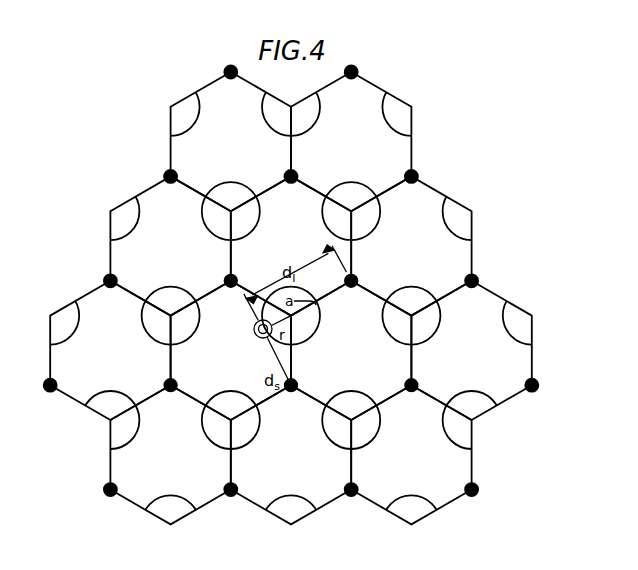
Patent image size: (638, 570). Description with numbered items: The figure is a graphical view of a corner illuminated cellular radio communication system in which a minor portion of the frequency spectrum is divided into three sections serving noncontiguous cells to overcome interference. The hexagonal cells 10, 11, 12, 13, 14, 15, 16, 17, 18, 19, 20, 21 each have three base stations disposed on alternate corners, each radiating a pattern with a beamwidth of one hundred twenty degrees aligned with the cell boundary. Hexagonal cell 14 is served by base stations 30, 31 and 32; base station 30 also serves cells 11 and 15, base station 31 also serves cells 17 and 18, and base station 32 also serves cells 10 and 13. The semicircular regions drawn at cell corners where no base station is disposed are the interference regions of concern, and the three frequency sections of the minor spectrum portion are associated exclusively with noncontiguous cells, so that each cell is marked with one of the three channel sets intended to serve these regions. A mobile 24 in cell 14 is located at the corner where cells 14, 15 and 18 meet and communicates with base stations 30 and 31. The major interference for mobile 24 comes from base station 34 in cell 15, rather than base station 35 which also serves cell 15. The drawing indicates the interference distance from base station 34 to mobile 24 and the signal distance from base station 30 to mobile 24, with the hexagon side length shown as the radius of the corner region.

The cell 10 is at (160, 484).
The cell 11 is at (280, 488).
The cell 12 is at (400, 486).
The cell 13 is at (100, 384).
The hexagonal cell 14 is at (220, 384).
The cell 15 is at (343, 384).
The cell 16 is at (463, 386).
The cell 17 is at (162, 276).
The cell 18 is at (284, 210).
The cell 19 is at (403, 278).
The cell 20 is at (223, 174).
The cell 21 is at (343, 174).
The mobile 24 is at (264, 338).
The base station 30 is at (290, 391).
The base station 31 is at (230, 287).
The base station 32 is at (175, 381).
The base station 34 is at (351, 287).
The base station 35 is at (405, 386).